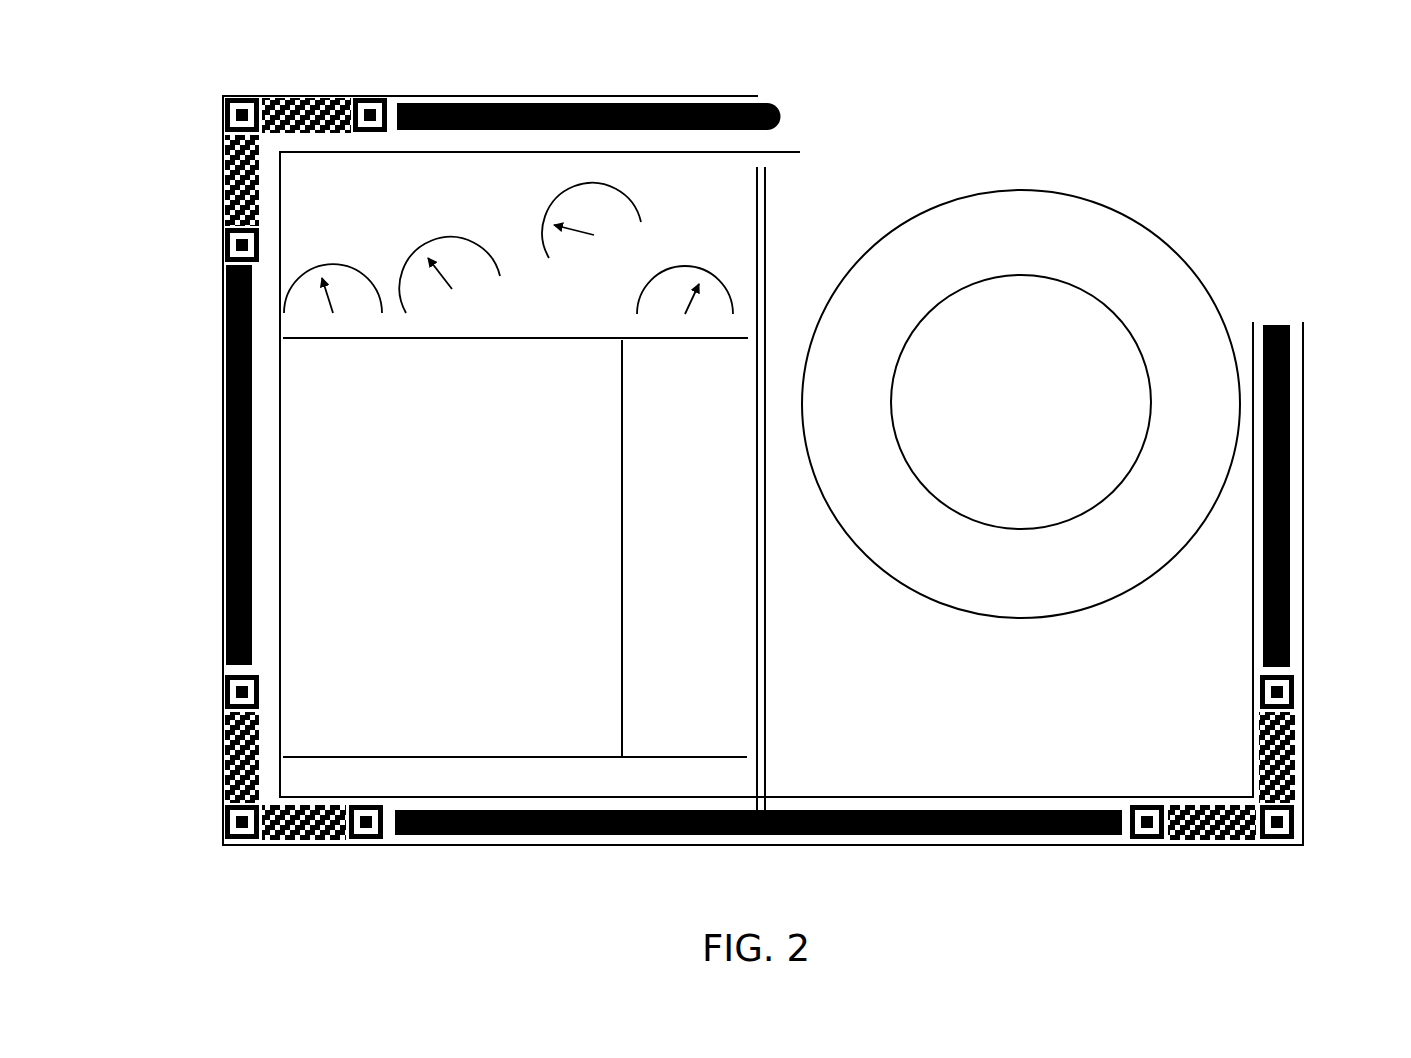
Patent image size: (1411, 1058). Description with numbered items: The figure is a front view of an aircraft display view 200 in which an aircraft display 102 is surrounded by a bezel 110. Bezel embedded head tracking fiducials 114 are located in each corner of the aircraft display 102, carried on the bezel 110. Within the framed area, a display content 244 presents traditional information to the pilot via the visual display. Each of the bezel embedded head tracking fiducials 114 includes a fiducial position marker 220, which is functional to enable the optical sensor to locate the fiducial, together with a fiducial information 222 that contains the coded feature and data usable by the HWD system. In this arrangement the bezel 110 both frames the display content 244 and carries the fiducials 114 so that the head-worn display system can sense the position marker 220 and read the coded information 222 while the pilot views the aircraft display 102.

The aircraft display view 200 is at (112, 122).
The aircraft display 102 is at (204, 356).
The bezel 110 is at (803, 95).
The bezel embedded head tracking fiducials 114 is at (202, 169).
The fiducial position marker 220 is at (223, 248).
The fiducial information 222 is at (223, 193).
The display content 244 is at (318, 523).